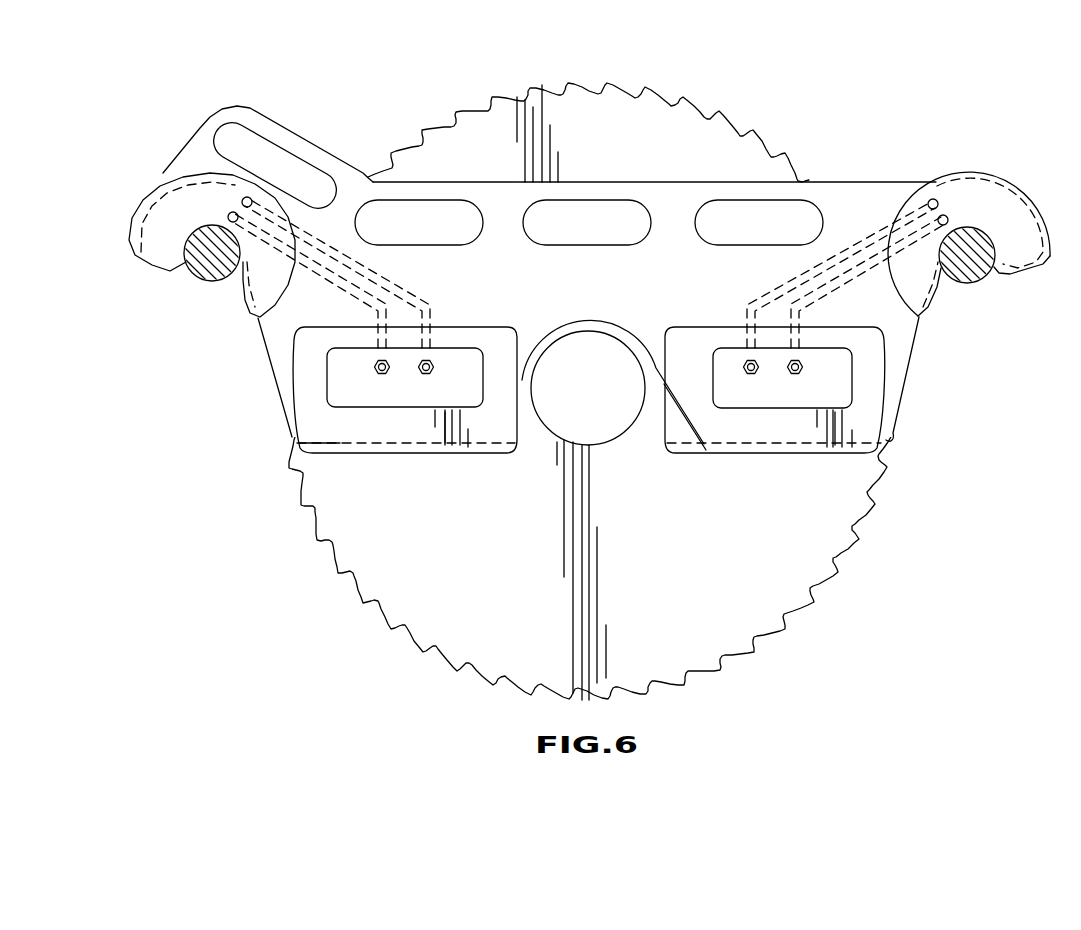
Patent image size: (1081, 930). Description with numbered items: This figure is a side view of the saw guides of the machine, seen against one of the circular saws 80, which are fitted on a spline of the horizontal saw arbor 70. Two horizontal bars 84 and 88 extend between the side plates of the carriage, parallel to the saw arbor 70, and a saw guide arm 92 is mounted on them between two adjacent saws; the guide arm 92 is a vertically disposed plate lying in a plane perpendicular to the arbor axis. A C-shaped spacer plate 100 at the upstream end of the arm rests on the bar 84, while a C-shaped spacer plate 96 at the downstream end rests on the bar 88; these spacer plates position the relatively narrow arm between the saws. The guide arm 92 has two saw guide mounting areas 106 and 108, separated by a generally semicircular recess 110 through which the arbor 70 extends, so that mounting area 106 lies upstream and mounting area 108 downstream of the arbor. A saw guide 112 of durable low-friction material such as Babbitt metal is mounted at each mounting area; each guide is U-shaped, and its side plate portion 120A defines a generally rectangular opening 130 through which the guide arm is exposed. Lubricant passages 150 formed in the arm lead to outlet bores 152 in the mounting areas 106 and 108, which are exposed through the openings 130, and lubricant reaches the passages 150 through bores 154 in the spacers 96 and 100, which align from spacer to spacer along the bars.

The circular saw 80 is at (580, 80).
The saw guide arm 92 is at (630, 180).
The saw arbor 70 is at (590, 342).
The semicircular recess 110 is at (686, 421).
The C-shaped spacer plate 100 is at (165, 185).
The C-shaped spacer plate 96 is at (1020, 188).
The horizontal bar 84 is at (208, 282).
The horizontal bar 88 is at (969, 283).
The bore 154 is at (247, 196).
The lubricant passage 150 is at (362, 266).
The saw guide mounting area 106 is at (282, 378).
The saw guide mounting area 108 is at (900, 378).
The rectangular opening 130 is at (342, 396).
The outlet bore 152 is at (382, 375).
The saw guide 112 is at (483, 417).
The side plate portion 120A is at (350, 432).